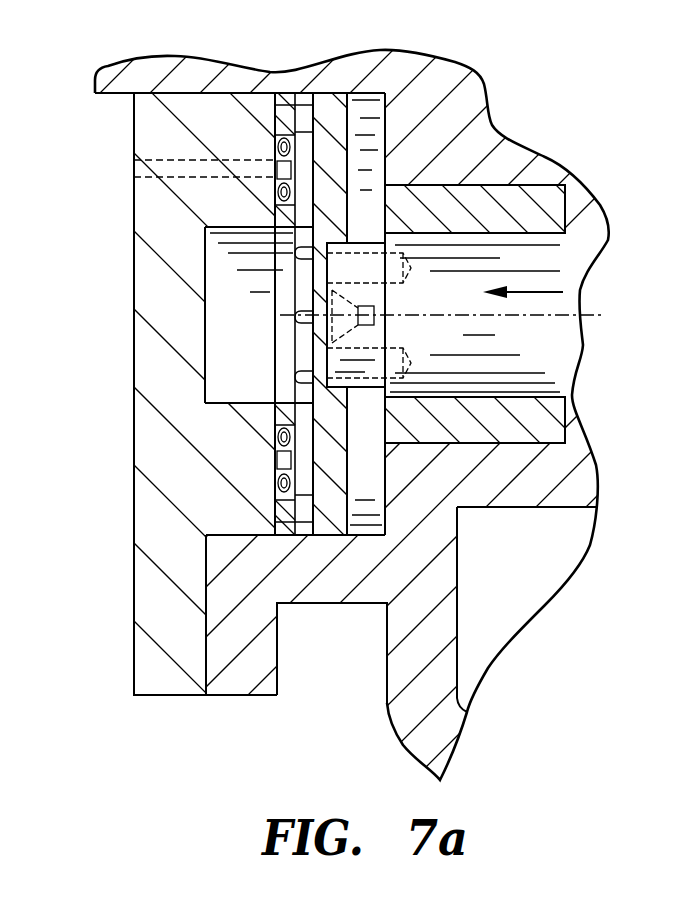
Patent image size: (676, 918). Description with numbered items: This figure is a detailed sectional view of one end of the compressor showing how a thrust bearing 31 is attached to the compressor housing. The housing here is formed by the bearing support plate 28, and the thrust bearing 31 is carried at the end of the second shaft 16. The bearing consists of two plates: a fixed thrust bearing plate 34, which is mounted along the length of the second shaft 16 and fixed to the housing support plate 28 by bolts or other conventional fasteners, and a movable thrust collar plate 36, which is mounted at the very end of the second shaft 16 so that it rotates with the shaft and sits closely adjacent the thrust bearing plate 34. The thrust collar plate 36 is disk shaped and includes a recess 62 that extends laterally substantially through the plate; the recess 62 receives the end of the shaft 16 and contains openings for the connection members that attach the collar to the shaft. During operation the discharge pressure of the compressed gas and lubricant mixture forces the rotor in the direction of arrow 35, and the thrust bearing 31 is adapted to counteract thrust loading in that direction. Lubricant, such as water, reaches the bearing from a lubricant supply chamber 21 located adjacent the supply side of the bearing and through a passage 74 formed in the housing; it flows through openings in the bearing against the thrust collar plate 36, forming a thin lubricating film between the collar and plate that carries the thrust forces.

The second shaft 16 is at (550, 360).
The lubricant supply chamber 21 is at (223, 322).
The bearing support plate 28 is at (170, 414).
The thrust bearing 31 is at (412, 114).
The thrust bearing plate 34 is at (291, 566).
The arrow 35 is at (533, 292).
The thrust collar plate 36 is at (335, 105).
The recess 62 is at (337, 245).
The passage 74 is at (177, 160).